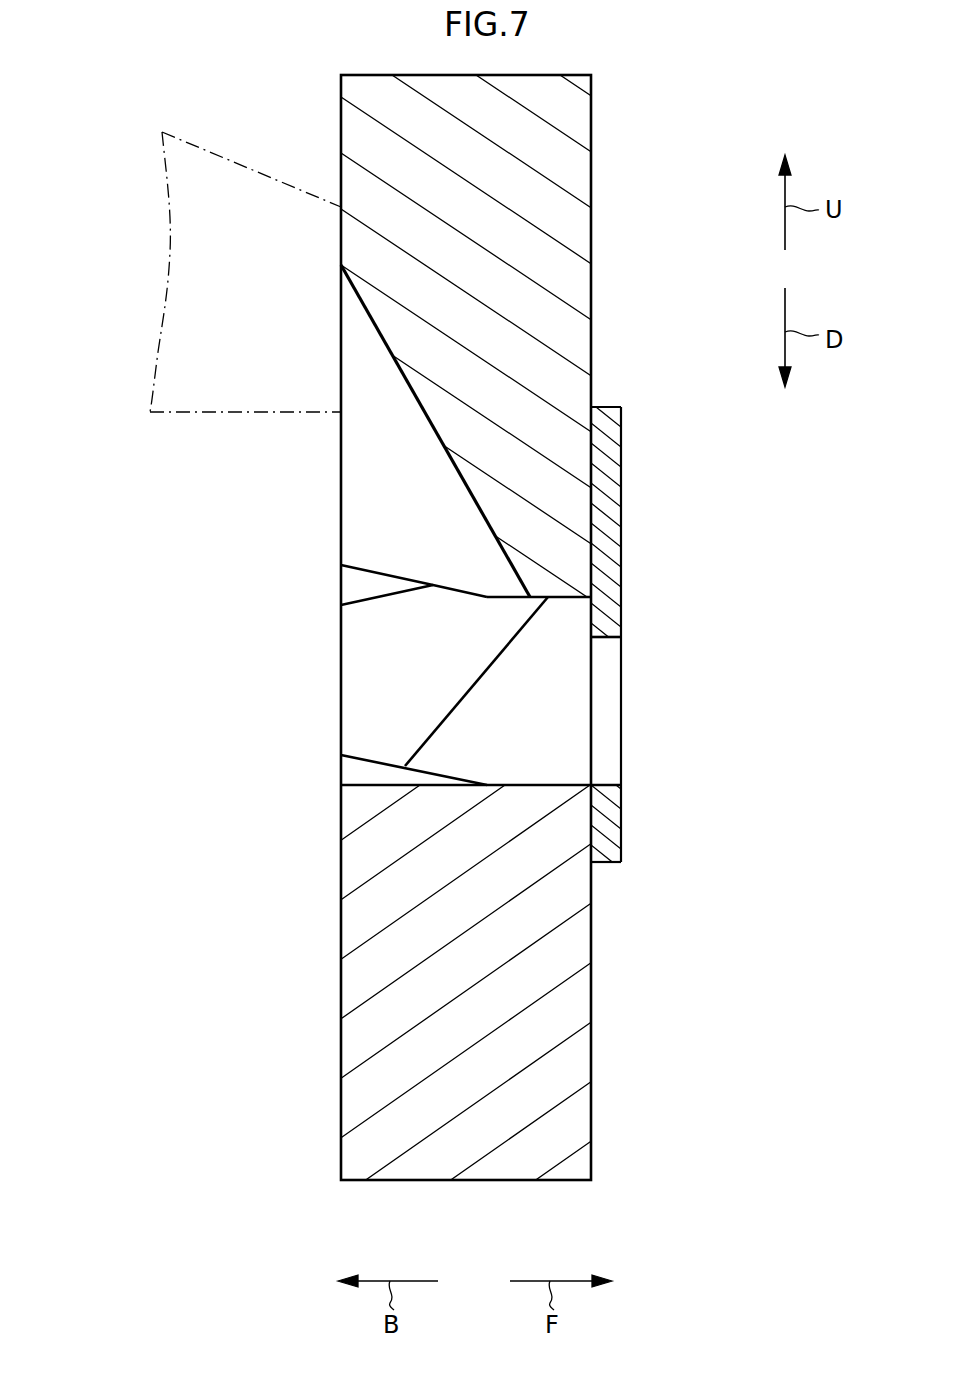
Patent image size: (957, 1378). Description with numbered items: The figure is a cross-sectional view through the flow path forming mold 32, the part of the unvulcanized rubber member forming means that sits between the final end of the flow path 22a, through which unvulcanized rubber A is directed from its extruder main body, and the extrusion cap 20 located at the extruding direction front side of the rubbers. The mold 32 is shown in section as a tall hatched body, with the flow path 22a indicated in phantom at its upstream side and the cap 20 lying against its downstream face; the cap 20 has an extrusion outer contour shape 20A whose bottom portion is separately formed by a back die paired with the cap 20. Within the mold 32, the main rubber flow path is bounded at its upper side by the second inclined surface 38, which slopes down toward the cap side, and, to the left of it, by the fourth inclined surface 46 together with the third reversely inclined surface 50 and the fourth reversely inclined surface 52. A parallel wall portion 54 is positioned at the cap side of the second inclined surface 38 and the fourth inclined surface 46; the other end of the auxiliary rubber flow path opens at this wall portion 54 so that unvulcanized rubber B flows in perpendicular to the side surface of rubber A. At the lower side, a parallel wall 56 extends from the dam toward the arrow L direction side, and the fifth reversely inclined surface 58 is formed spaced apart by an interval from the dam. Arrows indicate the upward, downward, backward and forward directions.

The flow path forming mold 32 is at (470, 1182).
The second inclined surface 38 is at (392, 356).
The fourth inclined surface 46 is at (356, 574).
The third reversely inclined surface 50 is at (364, 602).
The fourth reversely inclined surface 52 is at (469, 690).
The parallel wall portion 54 is at (610, 628).
The parallel wall 56 is at (530, 785).
The fifth reversely inclined surface 58 is at (373, 759).
The extrusion cap 20 is at (621, 578).
The extrusion outer contour shape 20A is at (603, 784).
The flow path 22a is at (173, 142).